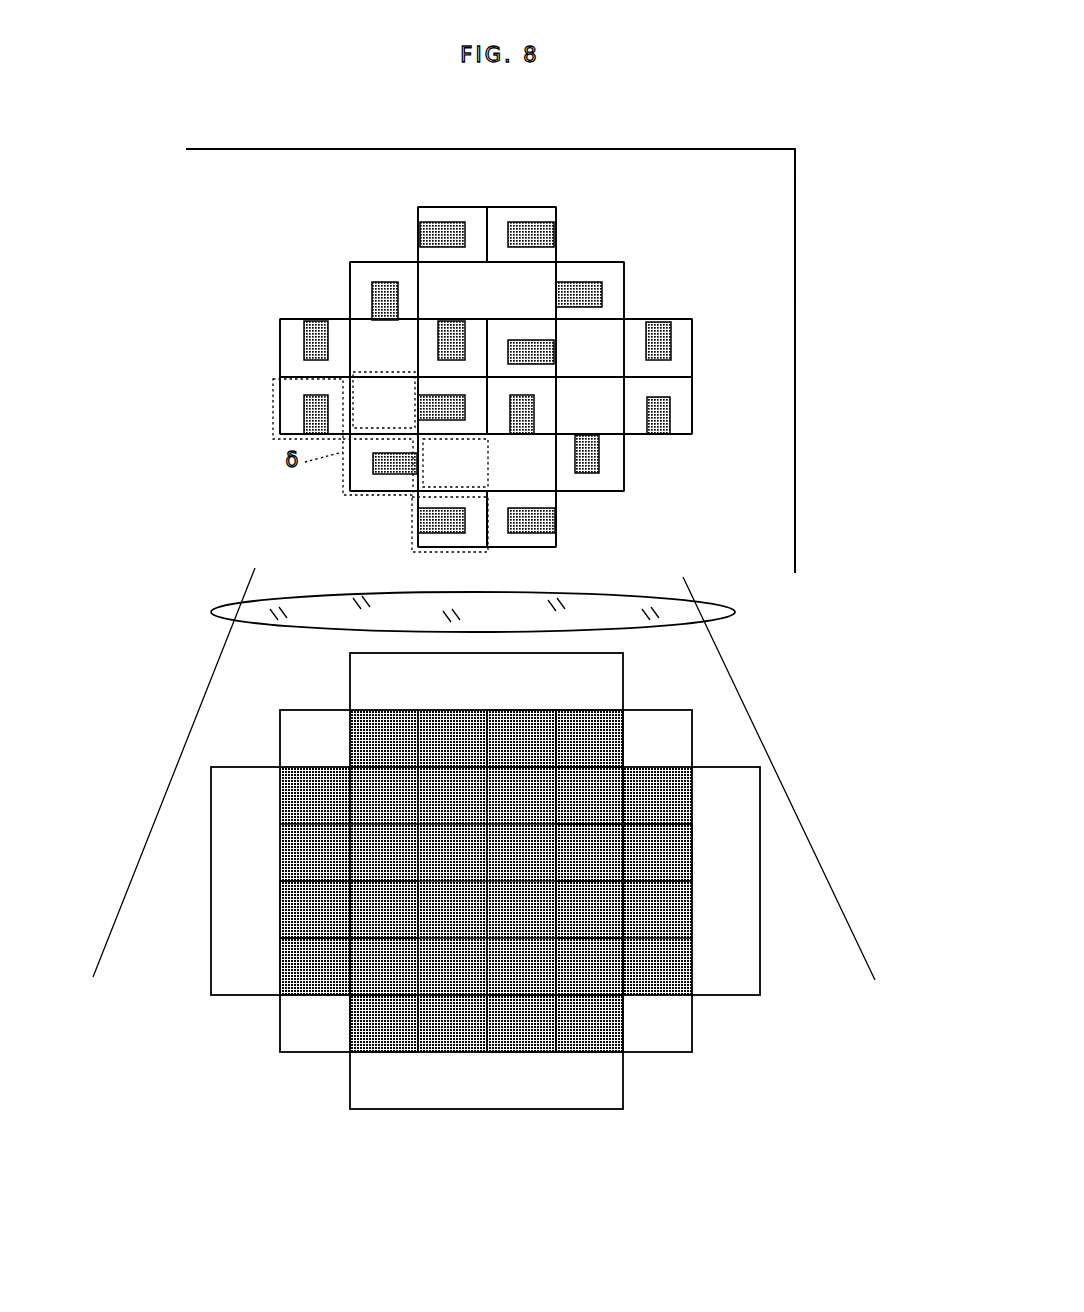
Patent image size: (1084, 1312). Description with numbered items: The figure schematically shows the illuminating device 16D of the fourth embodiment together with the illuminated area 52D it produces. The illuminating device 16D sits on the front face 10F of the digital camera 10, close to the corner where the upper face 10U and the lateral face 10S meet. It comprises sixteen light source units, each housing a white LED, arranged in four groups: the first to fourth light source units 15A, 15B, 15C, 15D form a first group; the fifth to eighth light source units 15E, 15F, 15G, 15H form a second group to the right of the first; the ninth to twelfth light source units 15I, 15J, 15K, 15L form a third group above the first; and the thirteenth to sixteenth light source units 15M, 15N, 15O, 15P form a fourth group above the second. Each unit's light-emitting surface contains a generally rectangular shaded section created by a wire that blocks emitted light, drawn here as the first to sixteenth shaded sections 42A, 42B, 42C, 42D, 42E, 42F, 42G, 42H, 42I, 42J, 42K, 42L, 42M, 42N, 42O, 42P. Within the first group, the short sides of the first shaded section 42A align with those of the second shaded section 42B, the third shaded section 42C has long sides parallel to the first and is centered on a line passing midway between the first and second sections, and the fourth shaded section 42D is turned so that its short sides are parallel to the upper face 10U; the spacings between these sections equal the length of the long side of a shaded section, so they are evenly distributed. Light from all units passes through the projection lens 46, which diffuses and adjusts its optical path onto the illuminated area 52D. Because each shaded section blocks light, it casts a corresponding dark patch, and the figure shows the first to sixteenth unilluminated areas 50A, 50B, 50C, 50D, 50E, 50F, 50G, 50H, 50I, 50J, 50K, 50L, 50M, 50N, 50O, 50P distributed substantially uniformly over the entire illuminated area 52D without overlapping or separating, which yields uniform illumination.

The digital camera 10 is at (808, 168).
The upper face 10U is at (655, 148).
The lateral face 10S is at (797, 302).
The front face 10F is at (780, 526).
The illuminating device 16D is at (782, 243).
The first light source unit 15A is at (416, 536).
The second light source unit 15B is at (416, 404).
The third light source unit 15C is at (348, 479).
The fourth light source unit 15D is at (278, 400).
The fifth light source unit 15E is at (696, 420).
The sixth light source unit 15F is at (543, 439).
The seventh light source unit 15G is at (627, 478).
The eighth light source unit 15H is at (559, 540).
The ninth light source unit 15I is at (278, 323).
The tenth light source unit 15J is at (435, 318).
The eleventh light source unit 15K is at (347, 265).
The twelfth light source unit 15L is at (415, 206).
The thirteenth light source unit 15M is at (559, 211).
The fourteenth light source unit 15N is at (525, 319).
The fifteenth light source unit 15O is at (627, 267).
The sixteenth light source unit 15P is at (696, 324).
The first shaded section 42A is at (452, 534).
The second shaded section 42B is at (422, 404).
The third shaded section 42C is at (403, 474).
The fourth shaded section 42D is at (304, 413).
The fifth shaded section 42E is at (671, 400).
The sixth shaded section 42F is at (534, 414).
The seventh shaded section 42G is at (599, 450).
The eighth shaded section 42H is at (535, 534).
The ninth shaded section 42I is at (304, 345).
The tenth shaded section 42J is at (463, 328).
The eleventh shaded section 42K is at (372, 300).
The twelfth shaded section 42L is at (446, 222).
The thirteenth shaded section 42M is at (527, 222).
The fourteenth shaded section 42N is at (552, 360).
The fifteenth shaded section 42O is at (602, 302).
The sixteenth shaded section 42P is at (671, 343).
The projection lens 46 is at (735, 615).
The illuminated area 52D is at (486, 912).
The first unilluminated area 50A is at (390, 1053).
The second unilluminated area 50B is at (395, 900).
The third unilluminated area 50C is at (360, 968).
The fourth unilluminated area 50D is at (312, 995).
The fifth unilluminated area 50E is at (625, 915).
The sixth unilluminated area 50F is at (508, 1052).
The seventh unilluminated area 50G is at (583, 1000).
The eighth unilluminated area 50H is at (600, 1015).
The ninth unilluminated area 50I is at (300, 825).
The tenth unilluminated area 50J is at (605, 738).
The eleventh unilluminated area 50K is at (397, 768).
The twelfth unilluminated area 50L is at (350, 740).
The thirteenth unilluminated area 50M is at (545, 742).
The fourteenth unilluminated area 50N is at (625, 873).
The fifteenth unilluminated area 50O is at (625, 800).
The sixteenth unilluminated area 50P is at (625, 836).